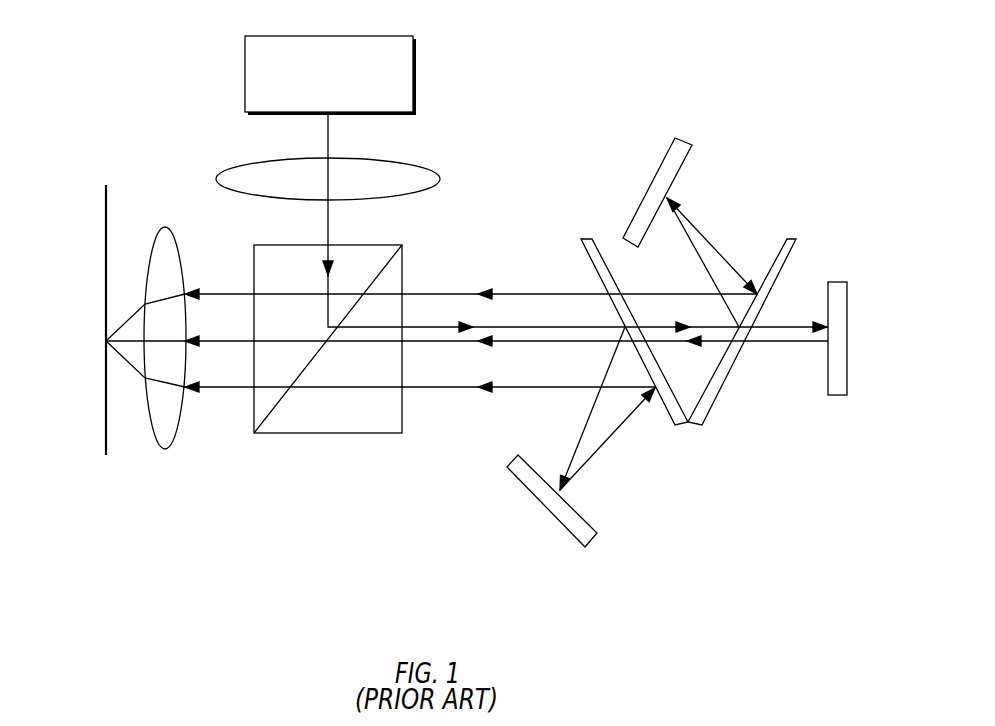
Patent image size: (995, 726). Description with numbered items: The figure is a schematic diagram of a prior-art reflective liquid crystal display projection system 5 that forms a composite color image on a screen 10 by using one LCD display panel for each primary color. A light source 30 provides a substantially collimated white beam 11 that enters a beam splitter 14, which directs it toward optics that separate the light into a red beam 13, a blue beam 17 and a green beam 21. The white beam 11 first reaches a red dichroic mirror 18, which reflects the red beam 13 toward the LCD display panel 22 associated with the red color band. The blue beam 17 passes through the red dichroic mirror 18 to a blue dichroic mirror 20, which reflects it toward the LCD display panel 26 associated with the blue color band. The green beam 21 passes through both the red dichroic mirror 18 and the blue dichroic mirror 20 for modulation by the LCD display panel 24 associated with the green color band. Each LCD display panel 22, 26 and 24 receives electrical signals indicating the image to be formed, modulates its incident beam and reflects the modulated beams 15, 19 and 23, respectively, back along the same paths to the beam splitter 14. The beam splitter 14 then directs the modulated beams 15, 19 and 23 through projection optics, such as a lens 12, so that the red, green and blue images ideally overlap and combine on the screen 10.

The reflective liquid crystal display projection system 5 is at (772, 105).
The screen 10 is at (73, 320).
The white beam 11 is at (549, 222).
The lens 12 is at (164, 356).
The red beam 13 is at (573, 408).
The beam splitter 14 is at (328, 356).
The modulated beam 15 is at (420, 437).
The blue beam 17 is at (696, 262).
The red dichroic mirror 18 is at (634, 347).
The modulated beam 19 is at (479, 248).
The blue dichroic mirror 20 is at (742, 347).
The green beam 21 is at (792, 307).
The LCD display panel 22 is at (544, 501).
The modulated beam 23 is at (467, 355).
The LCD display panel 24 is at (865, 338).
The LCD display panel 26 is at (473, 285).
The light source 30 is at (334, 58).